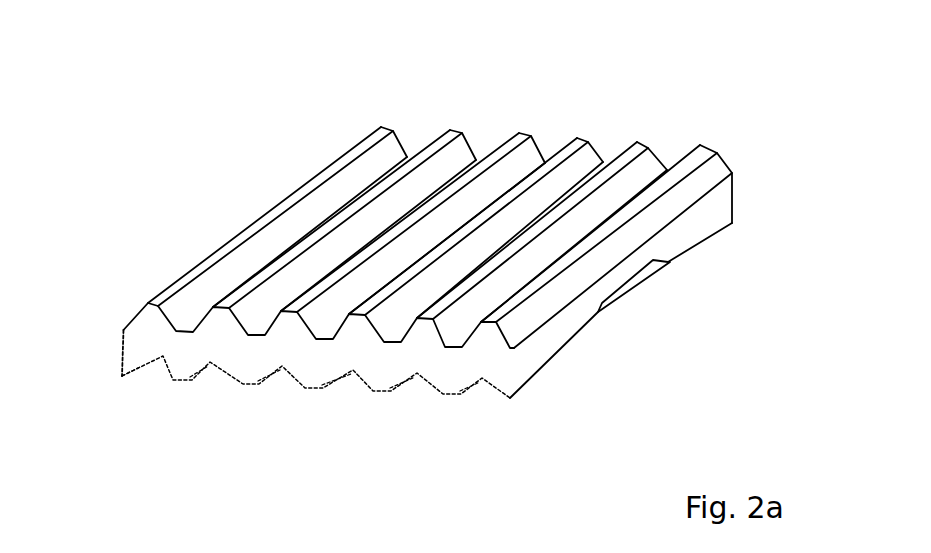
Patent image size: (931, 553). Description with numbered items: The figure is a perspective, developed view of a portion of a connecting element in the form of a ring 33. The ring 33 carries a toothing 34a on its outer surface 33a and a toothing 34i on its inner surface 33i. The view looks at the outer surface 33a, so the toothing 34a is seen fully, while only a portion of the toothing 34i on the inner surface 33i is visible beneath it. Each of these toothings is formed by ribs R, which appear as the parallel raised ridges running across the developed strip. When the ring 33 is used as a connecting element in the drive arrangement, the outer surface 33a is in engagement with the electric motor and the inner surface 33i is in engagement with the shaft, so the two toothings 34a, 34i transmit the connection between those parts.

The ring 33 is at (392, 257).
The outer surface 33a is at (428, 183).
The inner surface 33i is at (424, 359).
The toothing 34a is at (390, 78).
The toothing 34i is at (117, 388).
The ribs R is at (393, 172).